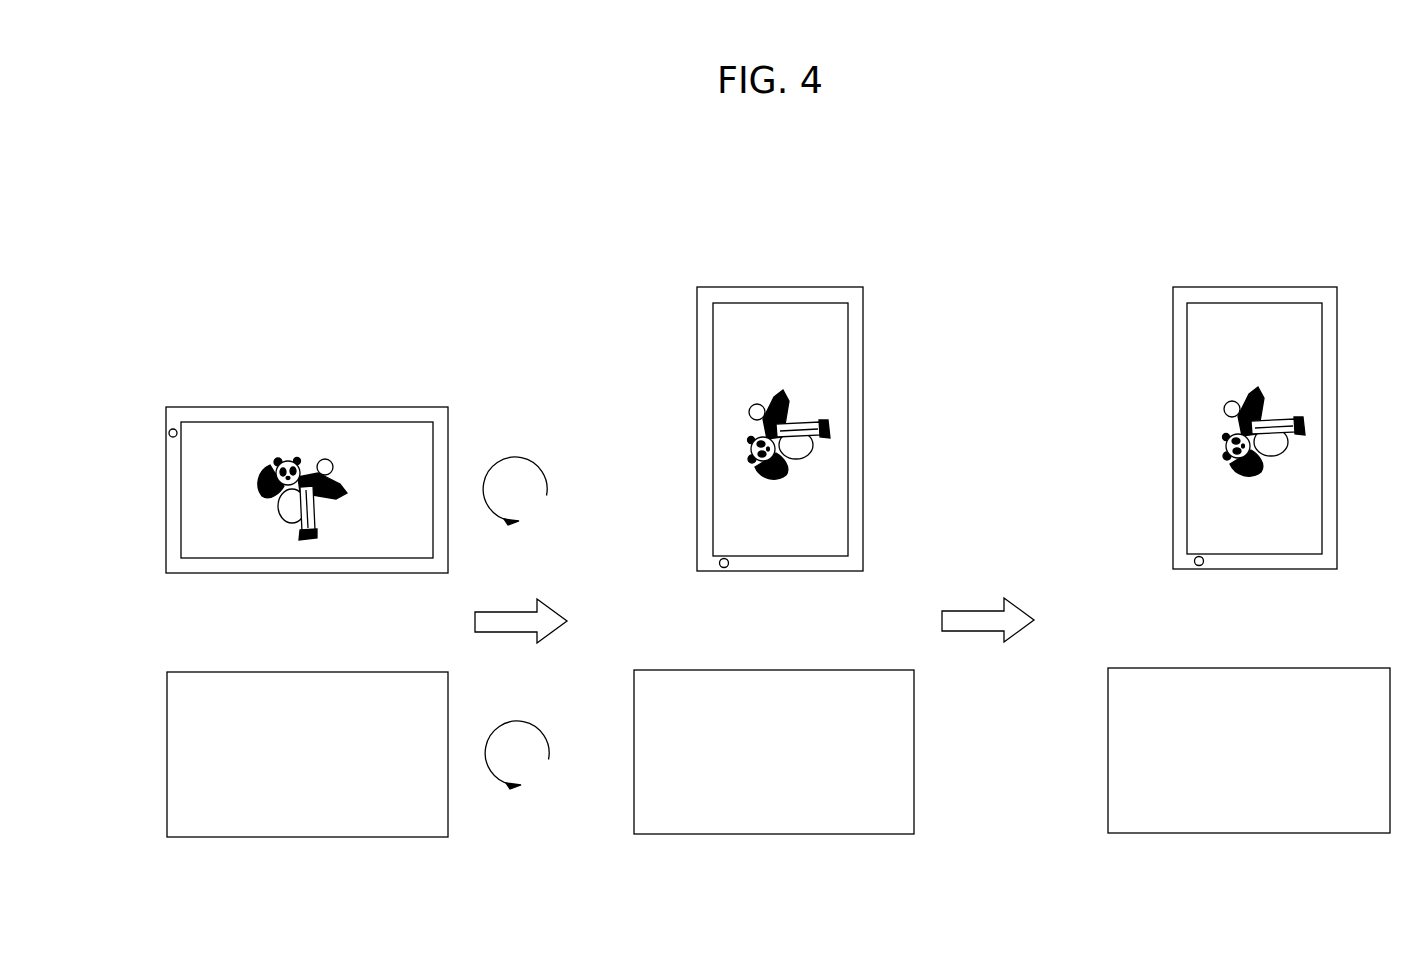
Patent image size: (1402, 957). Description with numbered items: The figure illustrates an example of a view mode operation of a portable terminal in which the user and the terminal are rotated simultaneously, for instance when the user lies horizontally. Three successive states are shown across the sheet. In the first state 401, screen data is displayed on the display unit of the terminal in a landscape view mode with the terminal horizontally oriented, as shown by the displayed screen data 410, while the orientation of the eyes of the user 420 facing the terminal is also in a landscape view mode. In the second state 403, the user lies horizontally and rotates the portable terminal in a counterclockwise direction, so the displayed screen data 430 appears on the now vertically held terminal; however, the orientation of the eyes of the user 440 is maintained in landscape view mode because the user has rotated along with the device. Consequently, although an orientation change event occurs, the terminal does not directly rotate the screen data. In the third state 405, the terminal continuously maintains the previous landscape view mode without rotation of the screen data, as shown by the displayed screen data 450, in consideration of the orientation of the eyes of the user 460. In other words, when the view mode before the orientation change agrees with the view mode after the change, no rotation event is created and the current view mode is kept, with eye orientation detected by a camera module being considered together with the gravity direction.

The initial landscape view state 401 is at (274, 523).
The rotation state 403 is at (741, 521).
The maintained landscape view state 405 is at (1217, 521).
The screen data display example 410 is at (166, 488).
The eye orientation of the user 420 is at (167, 751).
The screen data display example after rotation 430 is at (697, 487).
The eye orientation of the user after rotation 440 is at (634, 751).
The screen data display example maintaining view mode 450 is at (1173, 487).
The eye orientation of the user in final state 460 is at (1108, 751).